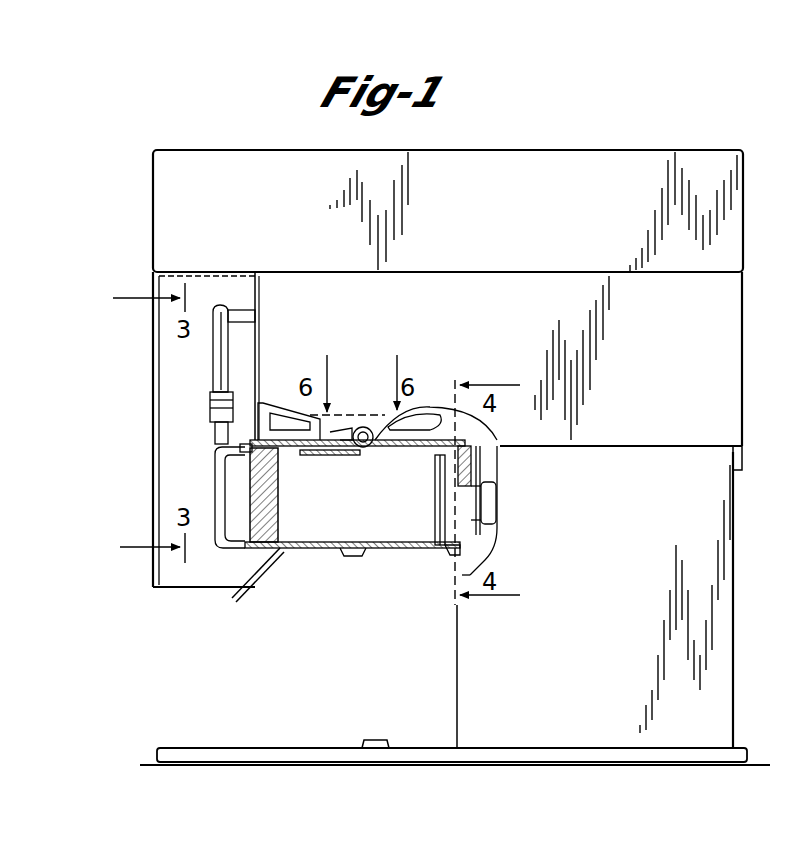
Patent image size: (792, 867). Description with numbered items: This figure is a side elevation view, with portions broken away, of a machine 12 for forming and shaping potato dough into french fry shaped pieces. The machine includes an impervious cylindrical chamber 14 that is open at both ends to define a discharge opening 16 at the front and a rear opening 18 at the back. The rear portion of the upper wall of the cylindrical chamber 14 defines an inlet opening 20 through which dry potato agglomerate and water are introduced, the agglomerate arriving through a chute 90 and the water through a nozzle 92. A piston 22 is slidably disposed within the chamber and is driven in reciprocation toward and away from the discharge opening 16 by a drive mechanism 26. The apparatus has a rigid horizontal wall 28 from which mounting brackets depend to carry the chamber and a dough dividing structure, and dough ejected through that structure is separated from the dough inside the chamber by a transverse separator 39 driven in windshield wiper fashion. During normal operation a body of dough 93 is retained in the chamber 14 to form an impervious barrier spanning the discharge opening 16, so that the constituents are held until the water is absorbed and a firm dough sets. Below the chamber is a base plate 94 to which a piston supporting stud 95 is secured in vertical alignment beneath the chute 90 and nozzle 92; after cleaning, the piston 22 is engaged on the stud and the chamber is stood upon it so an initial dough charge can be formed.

The machine 12 is at (222, 128).
The transverse separator 39 is at (210, 480).
The discharge opening 16 is at (236, 552).
The body of dough 93 is at (278, 511).
The inlet opening 20 is at (356, 447).
The rigid horizontal wall 28 is at (292, 455).
The nozzle 92 is at (372, 449).
The chute 90 is at (418, 446).
The piston 22 is at (435, 520).
The cylindrical chamber 14 is at (293, 546).
The rear opening 18 is at (452, 552).
The drive mechanism 26 is at (498, 478).
The base plate 94 is at (190, 748).
The piston supporting stud 95 is at (376, 740).